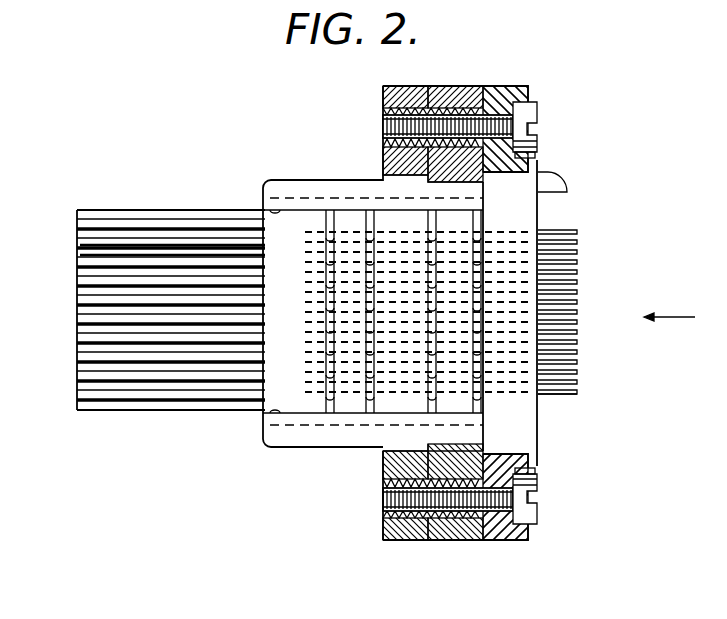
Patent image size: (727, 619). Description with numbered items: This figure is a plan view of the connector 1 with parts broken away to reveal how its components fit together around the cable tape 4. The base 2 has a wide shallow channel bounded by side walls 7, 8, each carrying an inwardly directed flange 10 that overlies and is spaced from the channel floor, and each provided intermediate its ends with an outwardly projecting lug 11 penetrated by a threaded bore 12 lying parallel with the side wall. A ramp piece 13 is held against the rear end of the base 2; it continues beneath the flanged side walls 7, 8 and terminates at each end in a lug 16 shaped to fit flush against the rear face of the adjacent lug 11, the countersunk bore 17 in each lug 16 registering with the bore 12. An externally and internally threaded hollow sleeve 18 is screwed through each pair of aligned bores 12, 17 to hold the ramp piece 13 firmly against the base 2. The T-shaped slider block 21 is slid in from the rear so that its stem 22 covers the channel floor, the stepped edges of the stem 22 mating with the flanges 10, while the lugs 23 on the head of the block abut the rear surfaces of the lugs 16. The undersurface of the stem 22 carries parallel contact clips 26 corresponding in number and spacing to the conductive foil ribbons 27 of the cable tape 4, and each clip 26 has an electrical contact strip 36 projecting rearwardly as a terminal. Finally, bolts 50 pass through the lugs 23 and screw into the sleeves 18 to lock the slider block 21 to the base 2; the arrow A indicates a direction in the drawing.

The connector 1 is at (609, 388).
The base 2 is at (376, 184).
The cable tape 4 is at (155, 396).
The side wall 7 is at (315, 198).
The side wall 8 is at (292, 428).
The inwardly directed flange 10 is at (275, 212).
The lug 11 is at (398, 92).
The threaded bore 12 is at (383, 156).
The ramp piece 13 is at (443, 556).
The lug 16 is at (445, 95).
The countersunk bore 17 is at (458, 112).
The hollow sleeve 18 is at (422, 106).
The slider block 21 is at (524, 428).
The stem 22 is at (253, 225).
The lug 23 is at (530, 155).
The contact clip 26 is at (576, 395).
The conductive foil ribbon 27 is at (80, 257).
The electrical contact strip 36 is at (577, 270).
The bolt 50 is at (515, 127).
The mating direction A is at (669, 304).